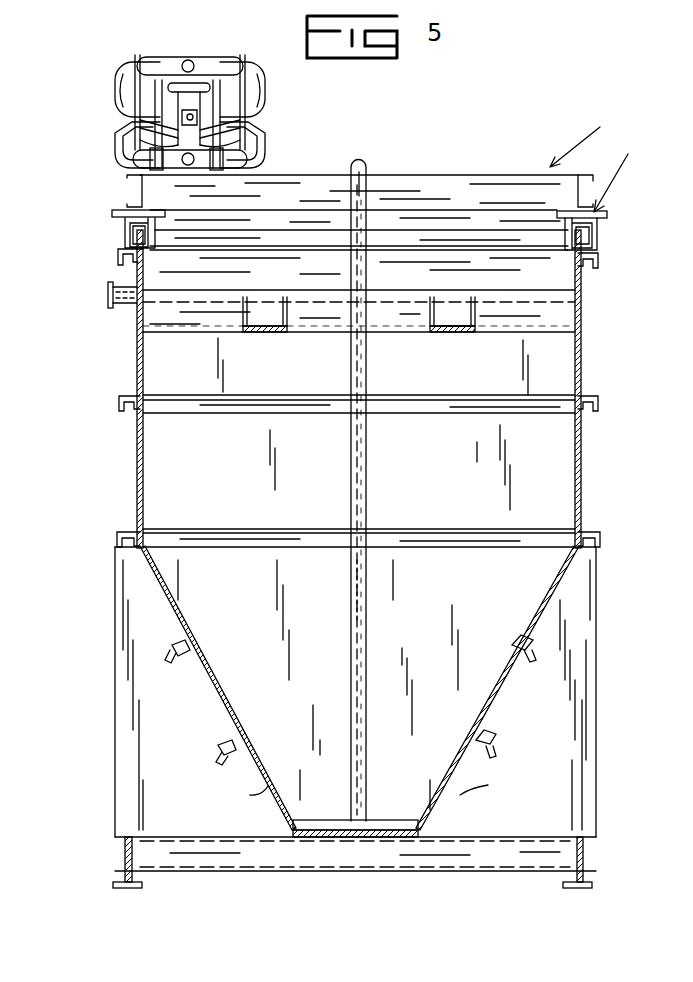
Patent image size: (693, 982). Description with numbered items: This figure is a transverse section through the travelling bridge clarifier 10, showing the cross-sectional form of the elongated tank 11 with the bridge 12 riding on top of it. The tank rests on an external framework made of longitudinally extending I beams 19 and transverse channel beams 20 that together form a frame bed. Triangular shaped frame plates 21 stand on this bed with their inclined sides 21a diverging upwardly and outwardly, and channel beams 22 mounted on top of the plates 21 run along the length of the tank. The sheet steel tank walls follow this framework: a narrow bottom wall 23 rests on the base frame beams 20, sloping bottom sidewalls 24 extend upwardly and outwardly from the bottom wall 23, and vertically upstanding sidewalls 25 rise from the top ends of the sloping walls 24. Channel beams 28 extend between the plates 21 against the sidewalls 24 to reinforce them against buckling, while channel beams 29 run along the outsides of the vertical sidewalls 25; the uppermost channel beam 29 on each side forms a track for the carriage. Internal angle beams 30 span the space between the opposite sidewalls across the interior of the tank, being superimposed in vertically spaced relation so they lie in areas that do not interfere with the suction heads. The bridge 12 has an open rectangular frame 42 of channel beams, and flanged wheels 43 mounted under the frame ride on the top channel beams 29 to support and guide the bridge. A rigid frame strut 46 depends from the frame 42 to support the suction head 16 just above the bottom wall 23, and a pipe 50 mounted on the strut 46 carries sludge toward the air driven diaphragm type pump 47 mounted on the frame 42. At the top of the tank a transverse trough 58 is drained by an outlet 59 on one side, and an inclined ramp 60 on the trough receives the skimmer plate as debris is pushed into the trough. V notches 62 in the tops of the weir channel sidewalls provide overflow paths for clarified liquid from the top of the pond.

The travelling bridge clarifier 10 is at (588, 132).
The elongated tank 11 is at (583, 374).
The bridge 12 is at (622, 169).
The suction head 16 is at (378, 820).
The I beam 19 is at (120, 888).
The transverse channel beam 20 is at (320, 852).
The triangular shaped frame plate 21 is at (130, 622).
The inclined side of frame plate 21a is at (366, 784).
The channel beam 22 is at (125, 530).
The bottom wall 23 is at (392, 840).
The bottom sidewall 24 is at (205, 665).
The vertical sidewall 25 is at (145, 480).
The channel beam 28 is at (215, 750).
The channel beam 29 is at (604, 262).
The internal angle beam 30 is at (486, 410).
The open rectangular frame 42 is at (418, 188).
The flanged wheel 43 is at (128, 232).
The frame strut 46 is at (364, 590).
The air driven diaphragm type pump 47 is at (262, 120).
The pipe 50 is at (366, 615).
The transverse trough 58 is at (583, 328).
The outlet 59 is at (108, 295).
The inclined ramp 60 is at (538, 333).
The V notch 62 is at (276, 332).